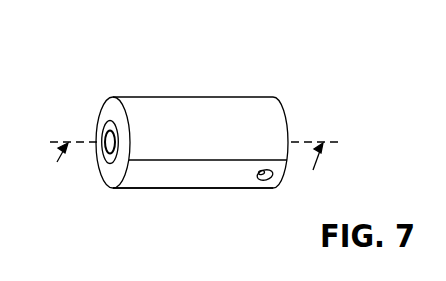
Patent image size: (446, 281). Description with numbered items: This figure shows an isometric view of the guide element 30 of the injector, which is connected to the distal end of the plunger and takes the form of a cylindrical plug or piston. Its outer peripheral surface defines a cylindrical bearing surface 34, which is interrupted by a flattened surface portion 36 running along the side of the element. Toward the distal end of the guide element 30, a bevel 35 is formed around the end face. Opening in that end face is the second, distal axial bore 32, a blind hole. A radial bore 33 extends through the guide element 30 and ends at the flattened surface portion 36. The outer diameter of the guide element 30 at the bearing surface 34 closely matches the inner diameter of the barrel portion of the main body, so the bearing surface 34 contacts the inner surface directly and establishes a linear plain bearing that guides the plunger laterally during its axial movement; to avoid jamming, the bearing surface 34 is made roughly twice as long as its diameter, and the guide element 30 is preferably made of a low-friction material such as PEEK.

The guide element 30 is at (162, 76).
The second axial bore 32 is at (99, 136).
The radial bore 33 is at (262, 181).
The cylindrical bearing surface 34 is at (197, 107).
The bevel 35 is at (118, 108).
The flattened surface portion 36 is at (172, 176).